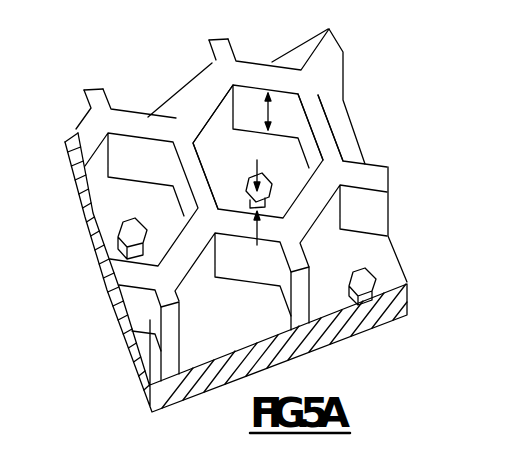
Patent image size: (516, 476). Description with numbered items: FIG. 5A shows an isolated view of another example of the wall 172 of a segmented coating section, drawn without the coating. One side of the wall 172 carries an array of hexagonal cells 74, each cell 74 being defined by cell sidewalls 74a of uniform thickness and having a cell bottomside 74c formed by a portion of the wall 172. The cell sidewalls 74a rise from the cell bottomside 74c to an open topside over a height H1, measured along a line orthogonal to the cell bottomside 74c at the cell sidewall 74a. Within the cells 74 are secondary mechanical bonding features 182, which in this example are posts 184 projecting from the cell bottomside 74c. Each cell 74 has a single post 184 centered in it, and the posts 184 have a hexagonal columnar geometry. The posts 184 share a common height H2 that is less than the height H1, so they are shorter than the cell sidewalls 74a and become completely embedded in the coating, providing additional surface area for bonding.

The cells 74 is at (306, 173).
The cell sidewalls 74a is at (293, 107).
The cell bottomside 74c is at (289, 158).
The secondary mechanical bonding features 182 is at (238, 188).
The posts 184 is at (125, 230).
The wall 172 is at (141, 380).
The height of the cell sidewalls H1 is at (268, 112).
The common height of the posts H2 is at (257, 245).